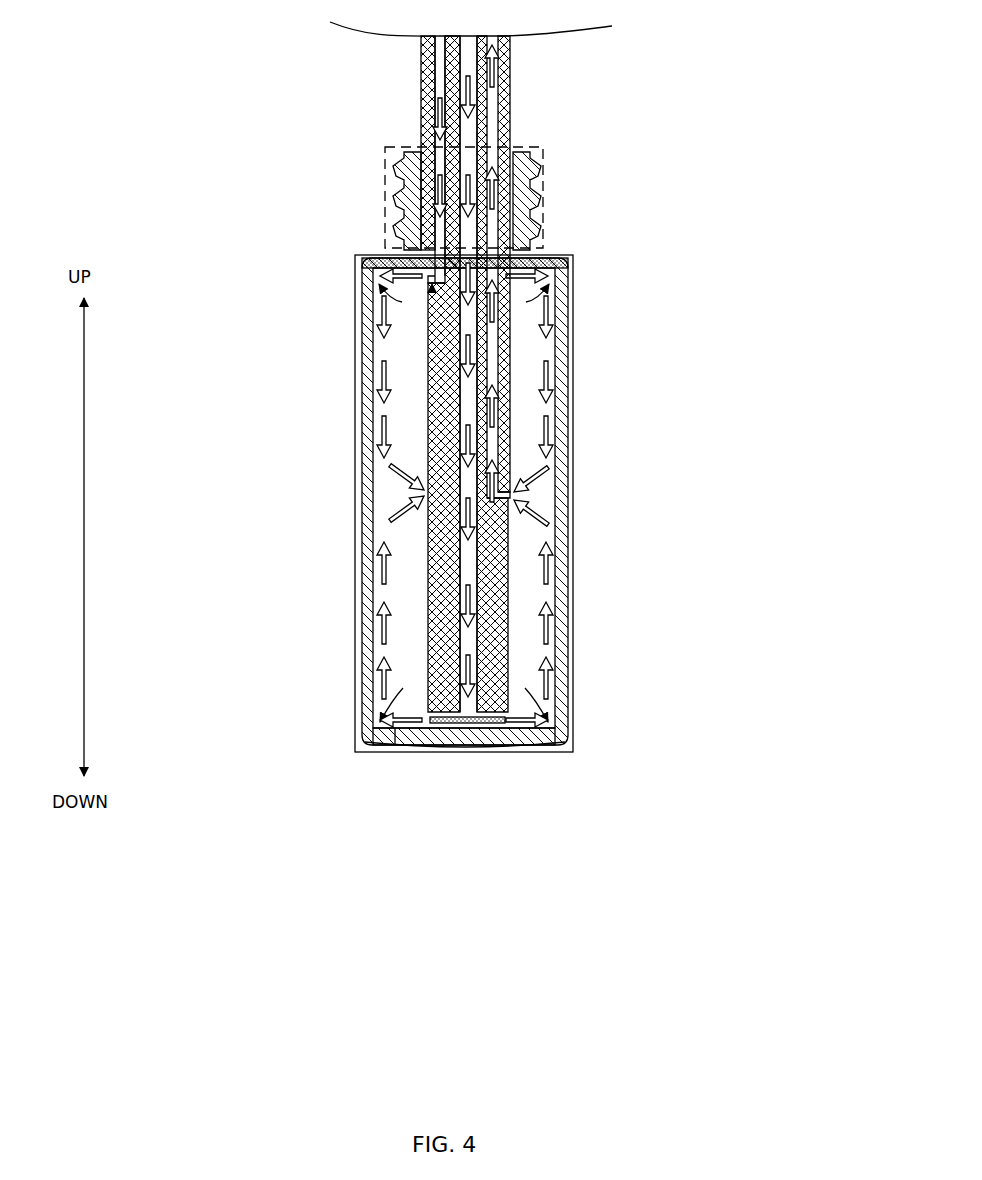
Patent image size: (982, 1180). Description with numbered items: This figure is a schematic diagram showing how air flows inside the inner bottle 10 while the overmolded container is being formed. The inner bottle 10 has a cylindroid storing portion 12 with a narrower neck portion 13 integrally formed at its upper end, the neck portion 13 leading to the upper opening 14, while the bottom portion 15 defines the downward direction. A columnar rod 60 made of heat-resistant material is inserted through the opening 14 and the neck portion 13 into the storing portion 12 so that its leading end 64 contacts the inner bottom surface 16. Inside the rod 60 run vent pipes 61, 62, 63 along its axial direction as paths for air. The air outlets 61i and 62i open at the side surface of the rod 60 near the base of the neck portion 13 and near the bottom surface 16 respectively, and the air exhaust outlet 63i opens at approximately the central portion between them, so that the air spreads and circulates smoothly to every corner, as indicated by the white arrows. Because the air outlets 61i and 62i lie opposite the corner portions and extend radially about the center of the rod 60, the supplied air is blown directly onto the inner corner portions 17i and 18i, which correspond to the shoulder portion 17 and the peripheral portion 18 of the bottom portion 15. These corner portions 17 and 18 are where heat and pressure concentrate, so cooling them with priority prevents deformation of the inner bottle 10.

The inner bottle 10 is at (458, 610).
The storing portion 12 is at (583, 400).
The neck portion 13 is at (385, 170).
The opening 14 is at (513, 93).
The bottom portion 15 is at (476, 740).
The inner bottom surface 16 is at (405, 745).
The shoulder portion 17 is at (355, 262).
The corner portion 17i is at (464, 301).
The peripheral portion of the bottom portion 18 is at (355, 738).
The corner portion 18i is at (464, 689).
The rod 60 is at (454, 479).
The vent pipe 61 is at (421, 152).
The air outlet 61i is at (513, 254).
The vent pipe 62 is at (490, 375).
The air outlet 62i is at (432, 724).
The vent pipe 63 is at (513, 118).
The air exhaust outlet 63i is at (512, 498).
The leading end 64 is at (466, 757).